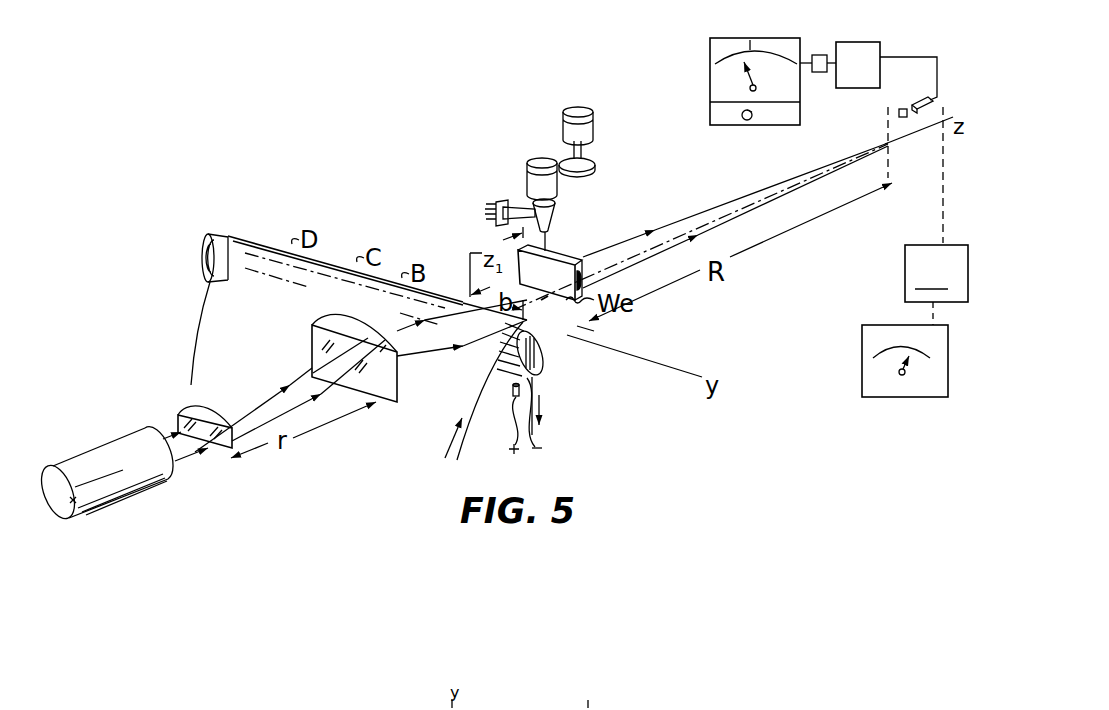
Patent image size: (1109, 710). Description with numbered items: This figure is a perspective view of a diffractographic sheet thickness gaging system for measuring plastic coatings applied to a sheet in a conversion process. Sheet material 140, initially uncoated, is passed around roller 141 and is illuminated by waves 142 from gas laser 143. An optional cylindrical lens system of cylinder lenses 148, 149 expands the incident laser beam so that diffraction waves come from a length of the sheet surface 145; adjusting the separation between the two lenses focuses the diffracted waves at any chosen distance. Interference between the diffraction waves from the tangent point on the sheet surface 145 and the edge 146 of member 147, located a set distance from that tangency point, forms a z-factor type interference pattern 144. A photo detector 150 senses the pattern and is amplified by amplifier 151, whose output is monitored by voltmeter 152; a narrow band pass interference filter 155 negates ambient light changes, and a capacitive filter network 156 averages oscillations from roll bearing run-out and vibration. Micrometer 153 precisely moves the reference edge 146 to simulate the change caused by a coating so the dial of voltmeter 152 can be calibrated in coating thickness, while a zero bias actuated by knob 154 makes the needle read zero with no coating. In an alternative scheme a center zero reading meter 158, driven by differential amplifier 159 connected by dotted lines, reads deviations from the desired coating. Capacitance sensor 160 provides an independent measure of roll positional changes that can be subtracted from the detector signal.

The sheet material 140 is at (480, 389).
The roller 141 is at (542, 372).
The waves 142 is at (188, 470).
The gas laser 143 is at (133, 497).
The interference pattern 144 is at (879, 134).
The sheet surface 145 is at (490, 308).
The edge 146 is at (545, 300).
The member 147 is at (560, 256).
The cylinder lens 148 is at (205, 412).
The cylinder lens 149 is at (310, 337).
The photo detector 150 is at (922, 97).
The amplifier 151 is at (865, 42).
The voltmeter 152 is at (712, 40).
The micrometer 153 is at (595, 168).
The knob 154 is at (747, 127).
The narrow band pass interference filter 155 is at (910, 114).
The capacitive filter network 156 is at (597, 118).
The center zero reading meter 158 is at (903, 397).
The differential amplifier 159 is at (936, 273).
The capacitance sensor 160 is at (513, 389).